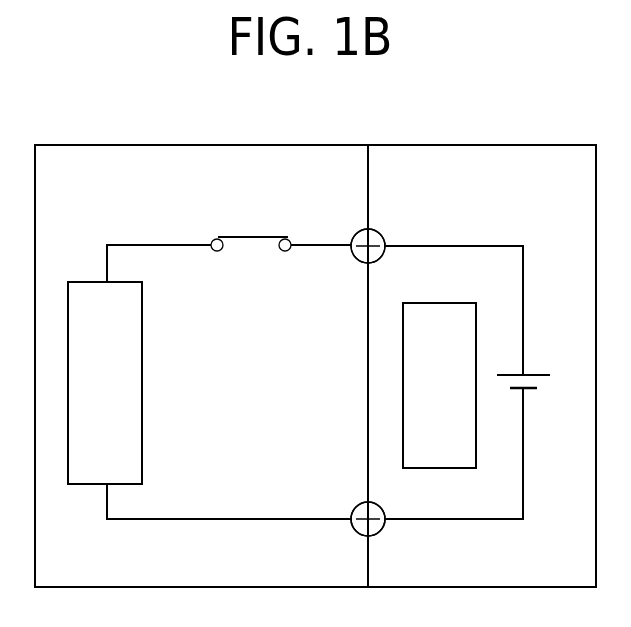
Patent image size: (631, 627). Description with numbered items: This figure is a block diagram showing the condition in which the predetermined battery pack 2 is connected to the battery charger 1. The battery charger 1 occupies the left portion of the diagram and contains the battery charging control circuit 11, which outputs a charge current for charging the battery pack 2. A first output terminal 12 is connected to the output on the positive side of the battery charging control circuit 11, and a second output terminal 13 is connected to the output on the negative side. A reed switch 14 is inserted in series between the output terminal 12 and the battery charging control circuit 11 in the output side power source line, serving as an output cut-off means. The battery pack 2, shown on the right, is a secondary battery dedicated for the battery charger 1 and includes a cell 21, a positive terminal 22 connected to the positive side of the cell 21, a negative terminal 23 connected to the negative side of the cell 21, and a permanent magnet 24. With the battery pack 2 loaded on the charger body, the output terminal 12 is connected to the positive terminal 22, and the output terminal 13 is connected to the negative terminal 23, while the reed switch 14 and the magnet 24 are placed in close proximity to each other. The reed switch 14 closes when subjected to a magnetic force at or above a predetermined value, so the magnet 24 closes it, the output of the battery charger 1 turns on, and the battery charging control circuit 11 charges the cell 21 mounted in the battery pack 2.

The battery charger 1 is at (113, 145).
The battery pack 2 is at (405, 145).
The battery charging control circuit 11 is at (92, 282).
The first output terminal 12 is at (355, 257).
The second output terminal 13 is at (355, 535).
The reed switch 14 is at (252, 237).
The cell 21 is at (533, 373).
The positive terminal 22 is at (385, 235).
The negative terminal 23 is at (382, 530).
The magnet 24 is at (430, 303).